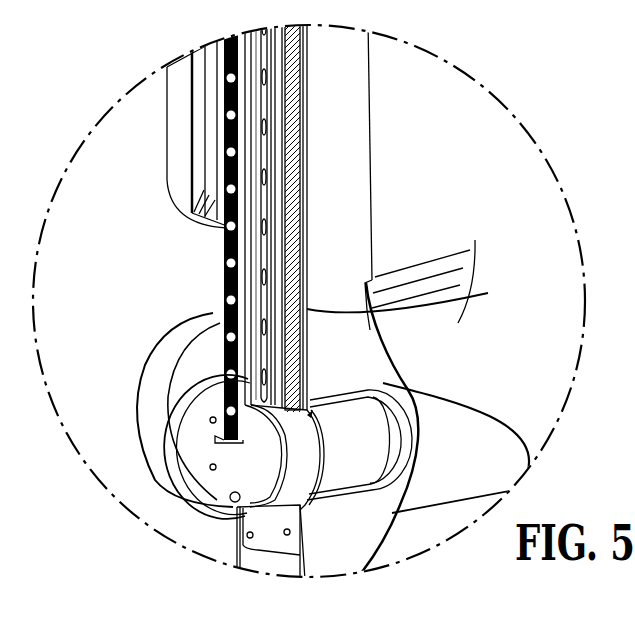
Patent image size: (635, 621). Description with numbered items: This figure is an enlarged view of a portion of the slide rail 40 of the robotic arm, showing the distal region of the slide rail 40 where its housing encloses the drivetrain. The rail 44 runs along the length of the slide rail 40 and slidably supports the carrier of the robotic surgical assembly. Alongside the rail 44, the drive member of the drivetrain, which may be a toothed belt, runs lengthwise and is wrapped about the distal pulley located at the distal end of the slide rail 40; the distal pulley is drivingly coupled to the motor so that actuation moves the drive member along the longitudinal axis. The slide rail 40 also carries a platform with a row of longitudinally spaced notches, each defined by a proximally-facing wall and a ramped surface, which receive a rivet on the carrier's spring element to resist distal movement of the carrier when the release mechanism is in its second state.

The slide rail 40 is at (155, 127).
The rail 44 is at (225, 87).